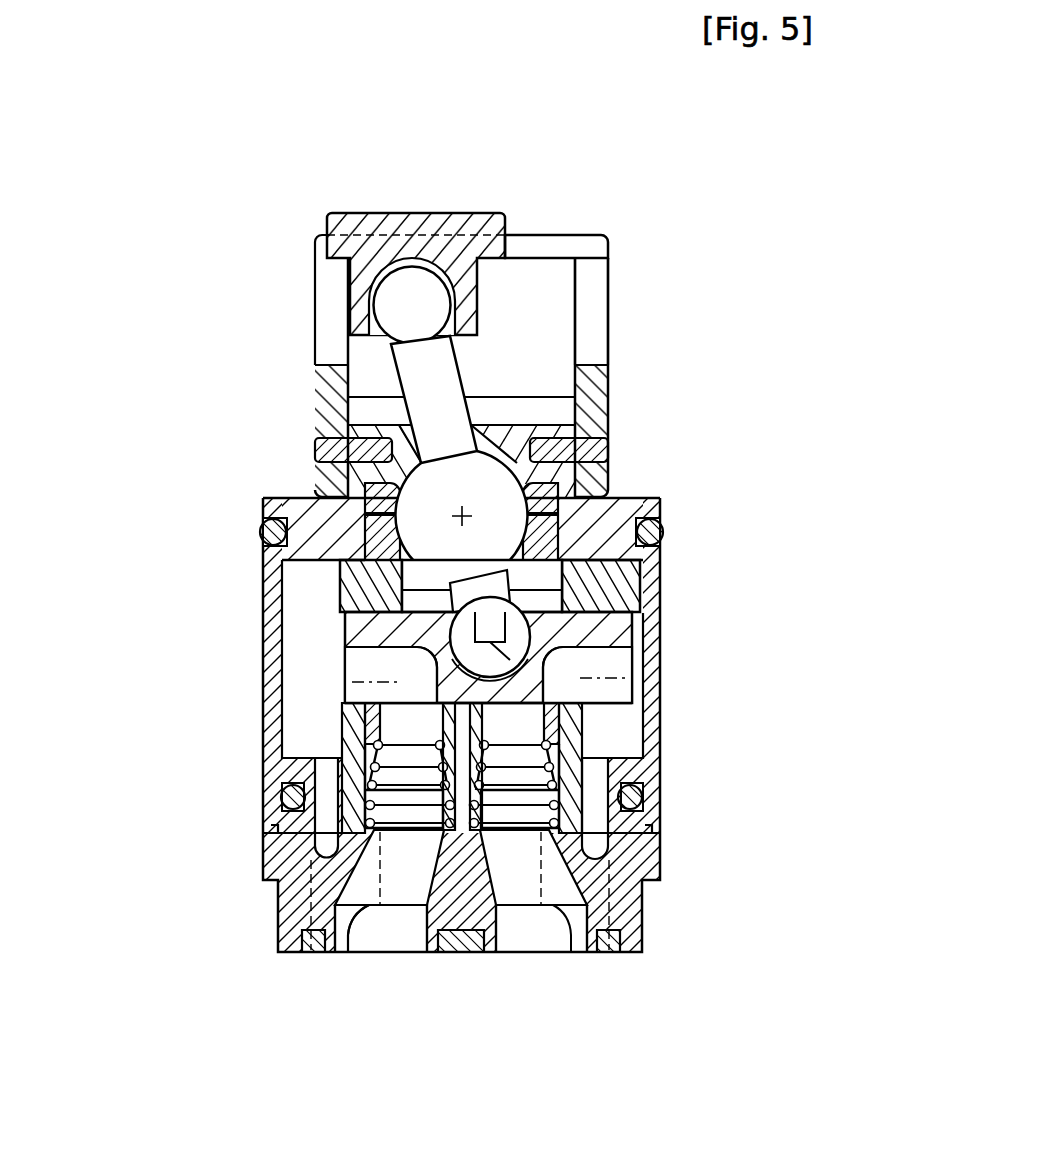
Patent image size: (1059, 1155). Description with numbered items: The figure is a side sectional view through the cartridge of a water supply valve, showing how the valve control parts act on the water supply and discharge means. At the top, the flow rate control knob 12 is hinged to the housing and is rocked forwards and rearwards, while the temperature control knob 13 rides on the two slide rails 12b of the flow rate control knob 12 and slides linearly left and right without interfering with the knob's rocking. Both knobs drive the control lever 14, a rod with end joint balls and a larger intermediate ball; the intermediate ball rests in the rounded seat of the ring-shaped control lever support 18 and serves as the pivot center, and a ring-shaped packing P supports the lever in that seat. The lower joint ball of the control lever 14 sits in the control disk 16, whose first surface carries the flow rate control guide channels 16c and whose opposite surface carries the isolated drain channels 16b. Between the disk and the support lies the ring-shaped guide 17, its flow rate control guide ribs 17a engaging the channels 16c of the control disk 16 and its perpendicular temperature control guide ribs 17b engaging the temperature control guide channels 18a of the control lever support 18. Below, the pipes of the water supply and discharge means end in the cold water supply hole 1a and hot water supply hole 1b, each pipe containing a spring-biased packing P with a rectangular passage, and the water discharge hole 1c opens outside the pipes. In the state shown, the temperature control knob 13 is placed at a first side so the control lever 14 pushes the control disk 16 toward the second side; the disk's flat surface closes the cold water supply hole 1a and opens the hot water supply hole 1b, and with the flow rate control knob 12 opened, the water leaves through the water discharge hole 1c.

The cold water supply hole 1a is at (517, 952).
The hot water supply hole 1b is at (398, 952).
The water discharge hole 1c is at (345, 952).
The flow rate control knob 12 is at (333, 327).
The slide rails 12b is at (553, 238).
The temperature control knob 13 is at (405, 213).
The control lever 14 is at (433, 378).
The control disk 16 is at (655, 648).
The drain channels 16b is at (345, 685).
The flow rate control guide channels 16c is at (547, 677).
The guide 17 is at (340, 600).
The flow rate control guide ribs 17a is at (345, 664).
The temperature control guide ribs 17b is at (640, 568).
The control lever support 18 is at (373, 548).
The temperature control guide channels 18a is at (545, 572).
The packing P is at (583, 763).